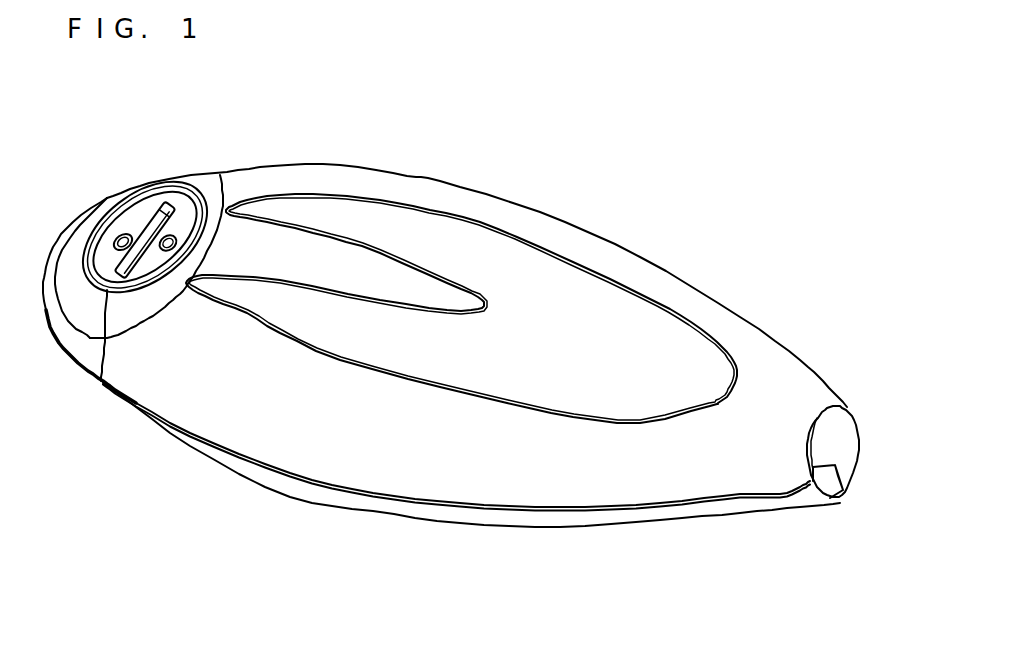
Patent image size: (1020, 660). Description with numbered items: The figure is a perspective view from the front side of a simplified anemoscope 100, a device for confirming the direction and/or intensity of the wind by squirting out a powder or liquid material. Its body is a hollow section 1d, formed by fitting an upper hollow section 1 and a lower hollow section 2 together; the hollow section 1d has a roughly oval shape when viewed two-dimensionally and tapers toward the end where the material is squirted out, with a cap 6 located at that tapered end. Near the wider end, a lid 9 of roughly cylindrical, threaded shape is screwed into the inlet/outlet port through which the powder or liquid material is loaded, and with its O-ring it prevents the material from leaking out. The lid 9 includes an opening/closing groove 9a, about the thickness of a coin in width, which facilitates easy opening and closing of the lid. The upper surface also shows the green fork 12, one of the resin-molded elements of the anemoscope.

The upper hollow section 1 is at (568, 233).
The hollow section 1d is at (494, 467).
The lower hollow section 2 is at (533, 518).
The cap 6 is at (840, 438).
The lid 9 is at (138, 210).
The opening/closing groove 9a is at (162, 205).
The green fork 12 is at (610, 327).
The simplified anemoscope 100 is at (423, 608).